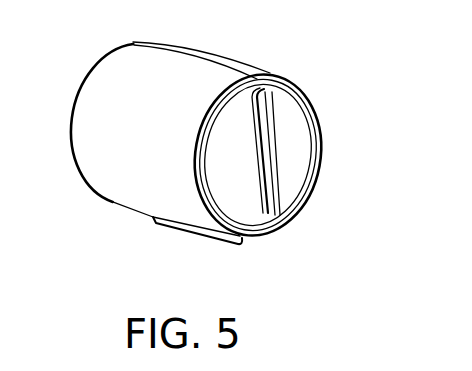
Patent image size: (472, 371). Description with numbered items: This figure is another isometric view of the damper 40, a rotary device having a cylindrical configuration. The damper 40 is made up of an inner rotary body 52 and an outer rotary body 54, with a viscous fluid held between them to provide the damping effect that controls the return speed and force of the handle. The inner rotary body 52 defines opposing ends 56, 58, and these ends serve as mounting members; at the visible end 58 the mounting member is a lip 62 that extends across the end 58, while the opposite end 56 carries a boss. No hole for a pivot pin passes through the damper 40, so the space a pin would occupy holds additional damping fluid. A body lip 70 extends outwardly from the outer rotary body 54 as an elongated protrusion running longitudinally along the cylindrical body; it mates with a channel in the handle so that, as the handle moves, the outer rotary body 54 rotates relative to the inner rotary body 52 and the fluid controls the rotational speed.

The damper 40 is at (187, 65).
The inner rotary body 52 is at (301, 152).
The outer rotary body 54 is at (97, 92).
The end 56 is at (113, 47).
The end 58 is at (308, 100).
The lip 62 is at (283, 222).
The body lip 70 is at (185, 233).